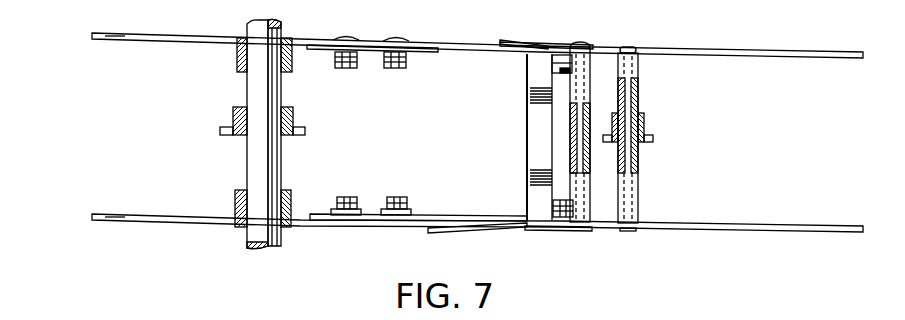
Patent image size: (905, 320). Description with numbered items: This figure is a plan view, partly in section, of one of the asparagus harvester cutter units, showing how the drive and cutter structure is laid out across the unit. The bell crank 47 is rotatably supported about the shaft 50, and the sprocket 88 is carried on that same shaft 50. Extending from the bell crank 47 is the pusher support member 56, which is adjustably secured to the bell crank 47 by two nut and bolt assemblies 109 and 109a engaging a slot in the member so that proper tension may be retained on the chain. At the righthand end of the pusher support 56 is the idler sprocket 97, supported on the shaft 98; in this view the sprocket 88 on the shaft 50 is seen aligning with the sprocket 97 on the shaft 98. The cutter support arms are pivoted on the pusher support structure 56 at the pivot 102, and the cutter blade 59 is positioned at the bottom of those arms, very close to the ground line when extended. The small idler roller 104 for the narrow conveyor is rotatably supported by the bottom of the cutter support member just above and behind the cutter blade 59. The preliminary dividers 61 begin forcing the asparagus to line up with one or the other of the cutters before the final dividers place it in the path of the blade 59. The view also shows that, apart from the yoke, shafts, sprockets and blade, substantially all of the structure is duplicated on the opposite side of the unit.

The bell crank 47 is at (186, 214).
The shaft 50 is at (250, 229).
The sprocket 88 is at (303, 111).
The pusher support member 56 is at (461, 214).
The preliminary divider 61 is at (432, 233).
The nut and bolt assembly 109 is at (350, 197).
The nut and bolt assembly 109a is at (395, 197).
The cutter blade 59 is at (535, 131).
The pivot 102 is at (563, 218).
The idler roller 104 is at (591, 199).
The sprocket 97 is at (645, 120).
The shaft 98 is at (640, 190).